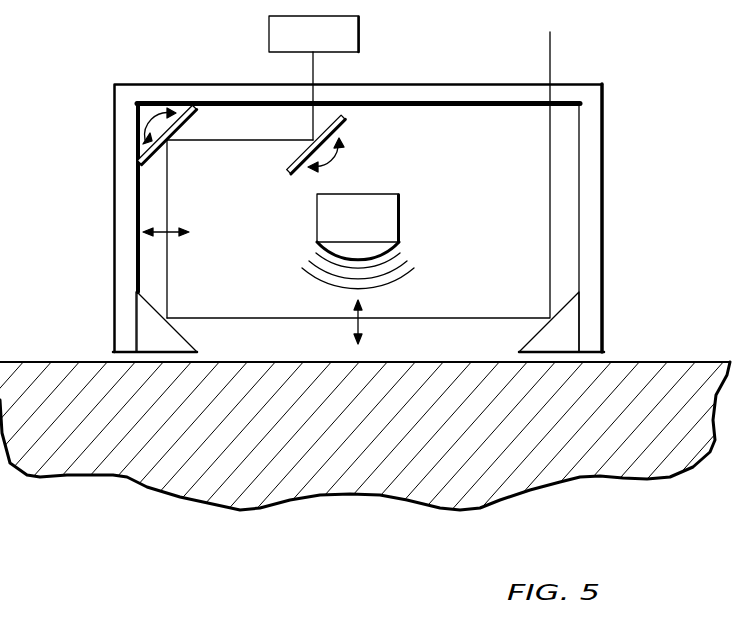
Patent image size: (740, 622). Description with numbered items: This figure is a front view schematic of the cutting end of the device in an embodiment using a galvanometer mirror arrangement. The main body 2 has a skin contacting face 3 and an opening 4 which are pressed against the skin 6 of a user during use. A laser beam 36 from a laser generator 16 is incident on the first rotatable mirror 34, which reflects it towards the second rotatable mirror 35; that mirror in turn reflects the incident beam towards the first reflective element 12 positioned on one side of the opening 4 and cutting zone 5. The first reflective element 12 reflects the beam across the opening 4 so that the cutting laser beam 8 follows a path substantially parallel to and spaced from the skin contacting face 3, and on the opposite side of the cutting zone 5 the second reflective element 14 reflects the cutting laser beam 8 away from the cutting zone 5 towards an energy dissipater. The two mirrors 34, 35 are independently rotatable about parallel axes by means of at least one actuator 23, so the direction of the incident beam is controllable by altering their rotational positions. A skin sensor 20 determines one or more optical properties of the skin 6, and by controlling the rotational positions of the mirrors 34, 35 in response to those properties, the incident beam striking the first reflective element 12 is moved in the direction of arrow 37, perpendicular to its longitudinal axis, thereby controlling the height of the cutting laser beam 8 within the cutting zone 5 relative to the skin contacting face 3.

The main body 2 is at (604, 125).
The skin contacting face 3 is at (592, 362).
The opening 4 is at (468, 352).
The cutting zone 5 is at (262, 351).
The skin 6 is at (562, 480).
The cutting laser beam 8 is at (445, 319).
The first reflective element 12 is at (145, 318).
The second reflective element 14 is at (573, 318).
The laser generator 16 is at (356, 30).
The skin sensor 20 is at (392, 206).
The actuator 23 is at (330, 162).
The first rotatable mirror 34 is at (340, 122).
The second rotatable mirror 35 is at (183, 117).
The laser beam 36 is at (313, 68).
The arrow 37 is at (176, 229).